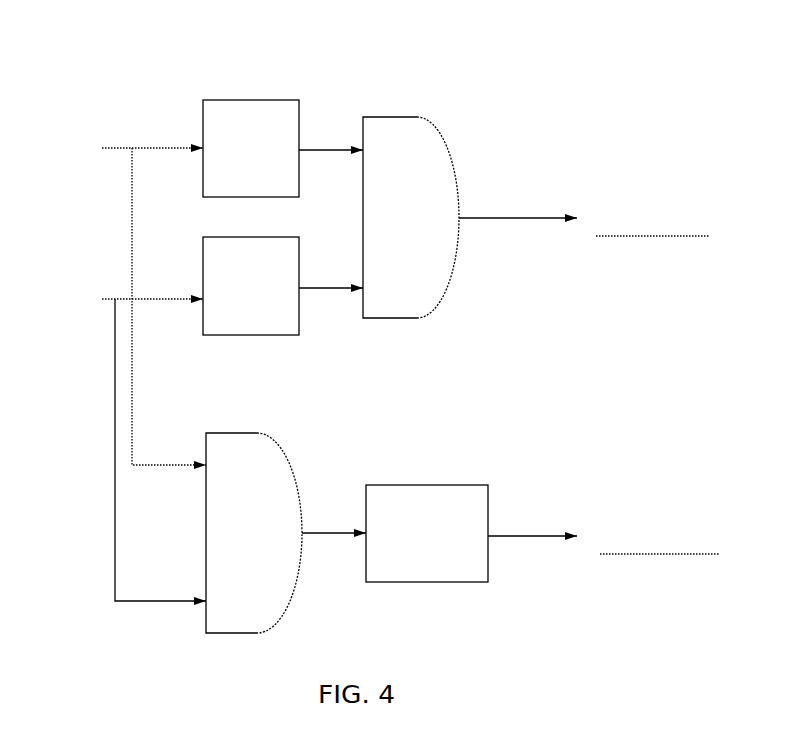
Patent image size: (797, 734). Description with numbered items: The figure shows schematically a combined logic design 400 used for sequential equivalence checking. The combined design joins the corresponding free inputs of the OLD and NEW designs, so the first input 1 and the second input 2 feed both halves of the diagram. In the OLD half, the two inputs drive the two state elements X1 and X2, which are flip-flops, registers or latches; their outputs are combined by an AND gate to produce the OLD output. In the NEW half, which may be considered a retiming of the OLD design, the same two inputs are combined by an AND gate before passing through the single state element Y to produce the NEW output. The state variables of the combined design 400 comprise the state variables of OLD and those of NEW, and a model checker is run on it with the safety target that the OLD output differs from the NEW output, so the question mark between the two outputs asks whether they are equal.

The combined logic design 400 is at (403, 70).
The first input signal in1 1 is at (120, 300).
The second input signal in2 2 is at (120, 443).
The state element OLD. X1 is at (251, 148).
The state element OLD. X2 is at (251, 286).
The state element NEW. Y is at (427, 533).